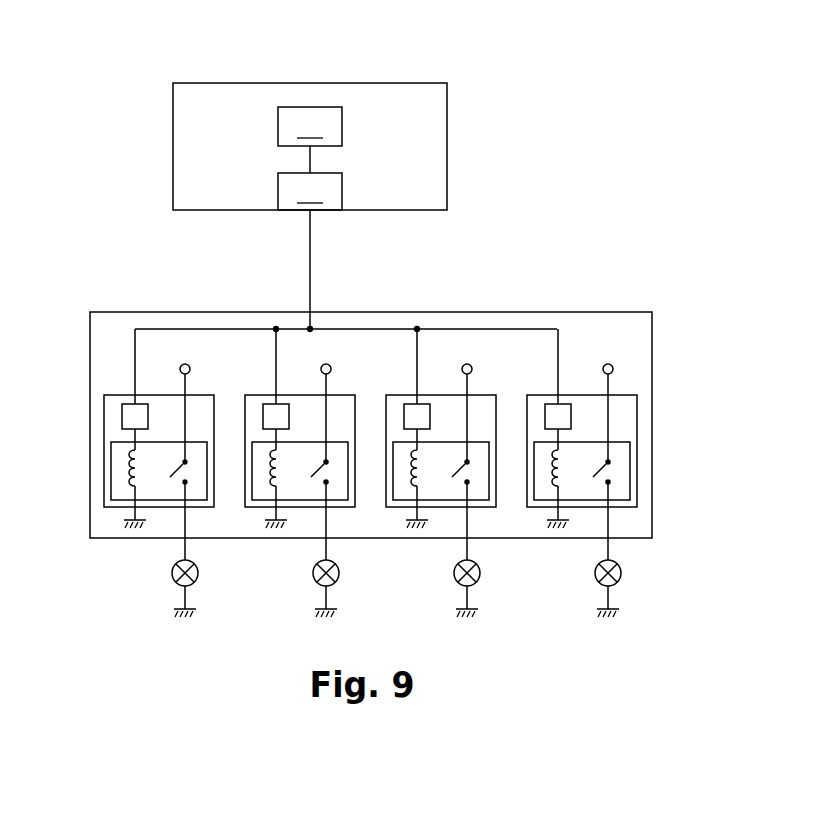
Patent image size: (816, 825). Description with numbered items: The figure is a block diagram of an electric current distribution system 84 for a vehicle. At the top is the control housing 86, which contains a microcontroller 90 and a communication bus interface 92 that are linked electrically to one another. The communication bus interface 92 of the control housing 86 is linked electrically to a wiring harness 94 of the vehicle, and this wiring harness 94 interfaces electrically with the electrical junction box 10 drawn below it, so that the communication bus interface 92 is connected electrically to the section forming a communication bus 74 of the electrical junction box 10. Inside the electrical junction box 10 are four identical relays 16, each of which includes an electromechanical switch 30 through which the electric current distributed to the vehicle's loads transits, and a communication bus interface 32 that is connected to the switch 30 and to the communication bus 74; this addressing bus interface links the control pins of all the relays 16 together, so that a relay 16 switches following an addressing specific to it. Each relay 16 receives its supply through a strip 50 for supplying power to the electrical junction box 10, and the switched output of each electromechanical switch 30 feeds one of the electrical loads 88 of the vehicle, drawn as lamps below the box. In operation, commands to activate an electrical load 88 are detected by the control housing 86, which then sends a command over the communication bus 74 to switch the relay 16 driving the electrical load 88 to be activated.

The electrical junction box 10 is at (662, 363).
The relay 16 is at (132, 444).
The electromechanical switch 30 is at (110, 483).
The communication bus interface 32 is at (122, 420).
The strip 50 is at (186, 363).
The communication bus 74 is at (482, 329).
The electric current distribution system 84 is at (305, 120).
The control housing 86 is at (169, 168).
The electrical loads 88 is at (166, 579).
The microcontroller 90 is at (310, 126).
The communication bus interface 92 is at (310, 191).
The wiring harness 94 is at (310, 272).